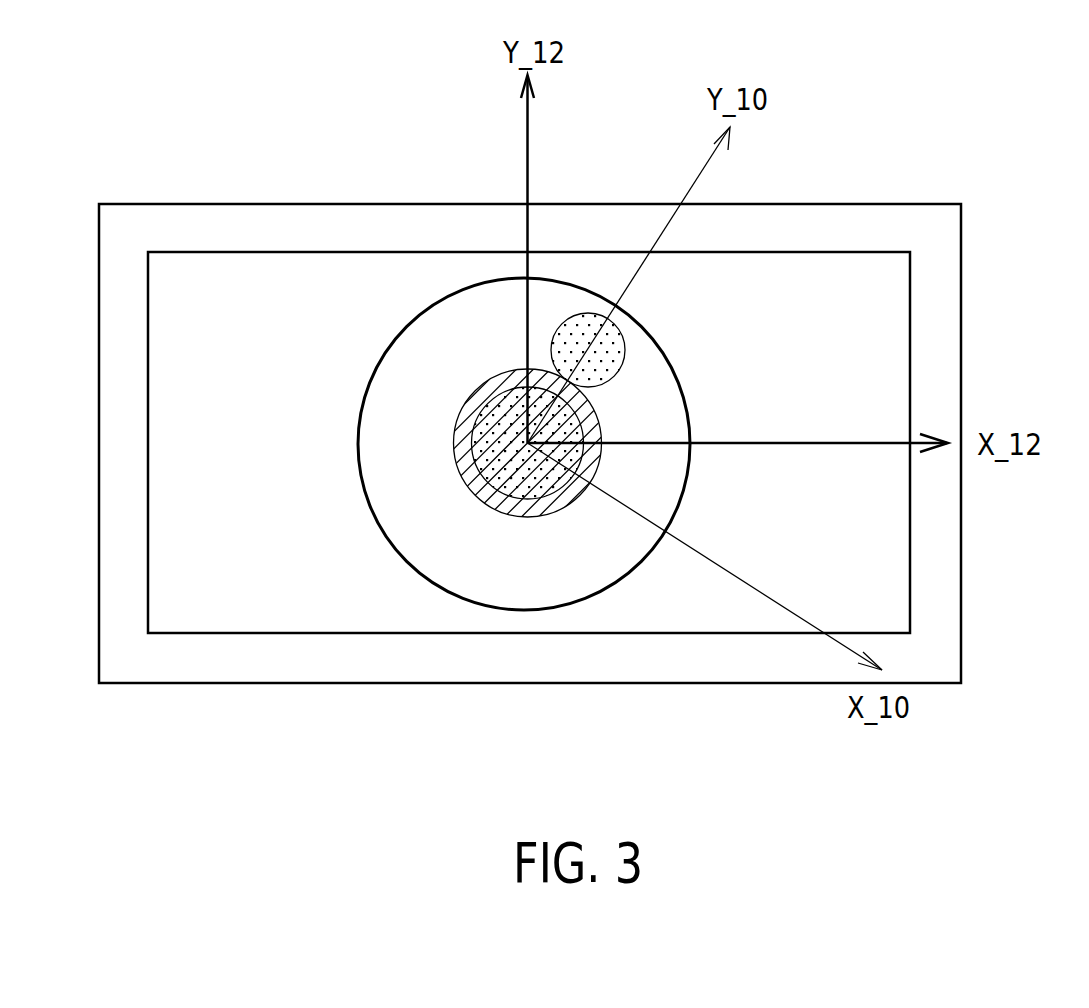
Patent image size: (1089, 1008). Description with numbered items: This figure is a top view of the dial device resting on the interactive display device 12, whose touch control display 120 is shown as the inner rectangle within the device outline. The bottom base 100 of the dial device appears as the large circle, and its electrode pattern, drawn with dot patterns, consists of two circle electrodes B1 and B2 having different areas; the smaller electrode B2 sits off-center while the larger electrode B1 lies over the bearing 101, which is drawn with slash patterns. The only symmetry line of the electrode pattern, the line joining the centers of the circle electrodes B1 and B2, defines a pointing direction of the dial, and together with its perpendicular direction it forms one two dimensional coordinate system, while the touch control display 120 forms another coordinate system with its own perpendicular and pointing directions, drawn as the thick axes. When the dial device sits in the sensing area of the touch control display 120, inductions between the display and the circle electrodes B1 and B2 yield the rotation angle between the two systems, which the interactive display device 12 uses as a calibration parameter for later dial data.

The interactive display device 12 is at (880, 213).
The touch control display 120 is at (235, 390).
The bottom base 100 is at (405, 325).
The bearing 101 is at (478, 490).
The circle electrode B1 is at (510, 397).
The circle electrode B2 is at (565, 320).